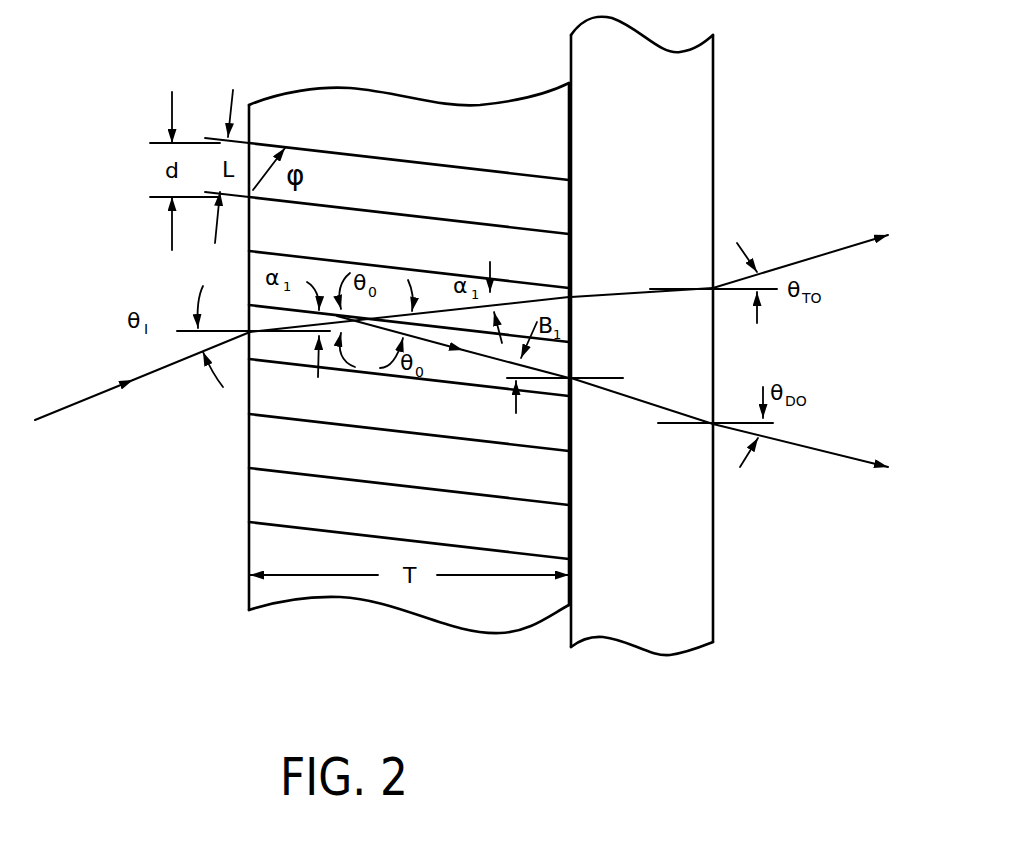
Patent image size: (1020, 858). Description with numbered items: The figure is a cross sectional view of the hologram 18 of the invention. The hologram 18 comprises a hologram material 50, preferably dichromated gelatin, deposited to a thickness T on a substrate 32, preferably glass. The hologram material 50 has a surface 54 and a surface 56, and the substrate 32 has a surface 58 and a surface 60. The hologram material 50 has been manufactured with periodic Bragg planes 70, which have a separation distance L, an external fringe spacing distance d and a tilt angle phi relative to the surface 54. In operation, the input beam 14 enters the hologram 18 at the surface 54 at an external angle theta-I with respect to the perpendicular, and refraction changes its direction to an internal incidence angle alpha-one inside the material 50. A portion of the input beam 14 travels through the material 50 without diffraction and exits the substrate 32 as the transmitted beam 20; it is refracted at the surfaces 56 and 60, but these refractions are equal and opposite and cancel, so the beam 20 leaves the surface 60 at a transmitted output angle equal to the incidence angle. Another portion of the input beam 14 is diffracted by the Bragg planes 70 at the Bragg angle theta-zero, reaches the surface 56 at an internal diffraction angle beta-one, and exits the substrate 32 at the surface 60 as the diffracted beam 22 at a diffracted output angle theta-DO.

The input beam 14 is at (92, 397).
The hologram 18 is at (127, 583).
The transmitted beam 20 is at (828, 250).
The diffracted beam 22 is at (827, 453).
The substrate 32 is at (657, 548).
The hologram material 50 is at (265, 490).
The surface 54 is at (248, 543).
The surface 56 is at (567, 563).
The surface 58 is at (571, 587).
The surface 60 is at (712, 587).
The Bragg planes 70 is at (347, 152).